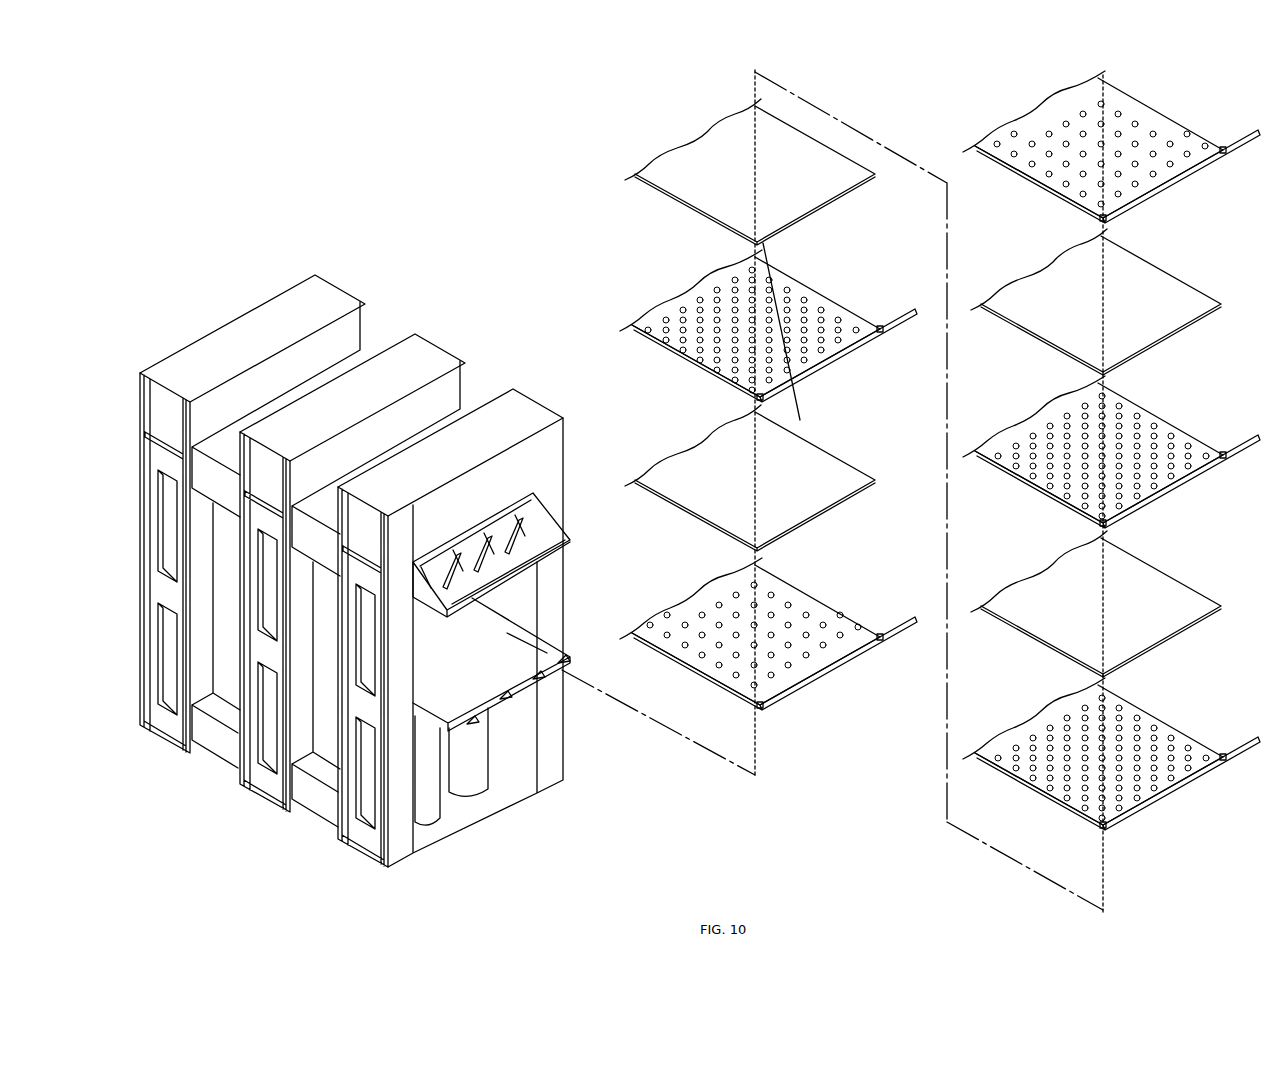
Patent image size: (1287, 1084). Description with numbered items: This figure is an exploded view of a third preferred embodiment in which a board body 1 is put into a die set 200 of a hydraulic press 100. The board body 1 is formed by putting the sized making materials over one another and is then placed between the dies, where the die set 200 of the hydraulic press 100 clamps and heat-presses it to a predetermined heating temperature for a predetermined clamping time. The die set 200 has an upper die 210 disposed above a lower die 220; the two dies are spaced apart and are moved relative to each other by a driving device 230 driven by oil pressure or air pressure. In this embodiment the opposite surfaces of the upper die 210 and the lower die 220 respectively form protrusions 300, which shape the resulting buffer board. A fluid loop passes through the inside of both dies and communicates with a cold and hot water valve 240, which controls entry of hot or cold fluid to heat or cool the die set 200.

The hydraulic press 100 is at (356, 534).
The die set 200 is at (707, 409).
The upper die 210 is at (723, 298).
The lower die 220 is at (703, 607).
The driving device 230 is at (487, 786).
The cold and hot water valve 240 is at (893, 316).
The protrusions 300 is at (718, 278).
The board body 1 is at (828, 470).